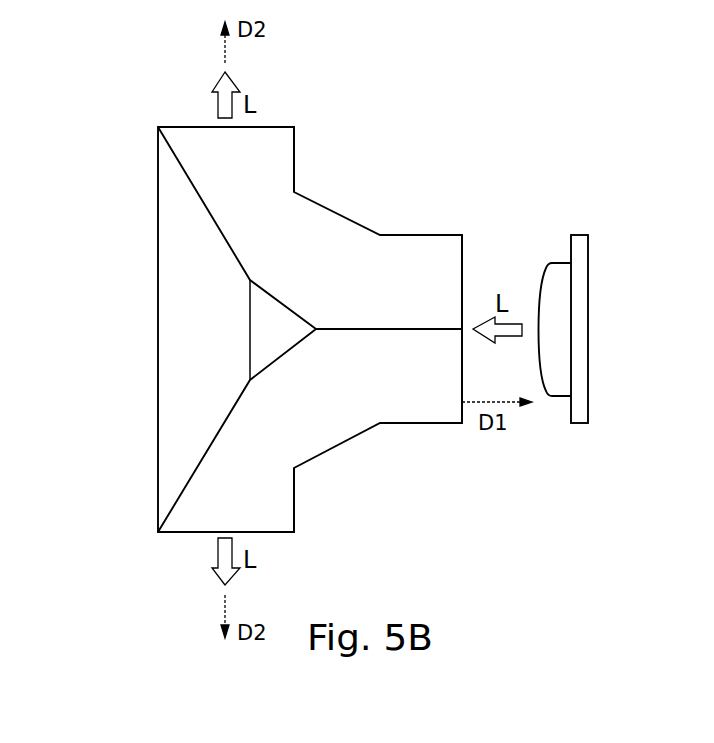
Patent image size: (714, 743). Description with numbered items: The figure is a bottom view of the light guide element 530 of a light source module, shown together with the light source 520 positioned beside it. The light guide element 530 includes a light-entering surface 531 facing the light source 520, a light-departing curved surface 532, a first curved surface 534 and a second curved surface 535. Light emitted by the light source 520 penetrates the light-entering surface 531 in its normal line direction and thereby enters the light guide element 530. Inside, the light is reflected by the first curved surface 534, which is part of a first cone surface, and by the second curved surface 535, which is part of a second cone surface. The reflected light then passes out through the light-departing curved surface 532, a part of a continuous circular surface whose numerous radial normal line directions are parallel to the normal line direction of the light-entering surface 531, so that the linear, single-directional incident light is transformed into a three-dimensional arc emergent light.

The light source 520 is at (580, 307).
The light guide element 530 is at (340, 212).
The light-entering surface 531 is at (462, 258).
The light-departing curved surface 532 is at (272, 127).
The first curved surface 534 is at (202, 228).
The second curved surface 535 is at (267, 333).